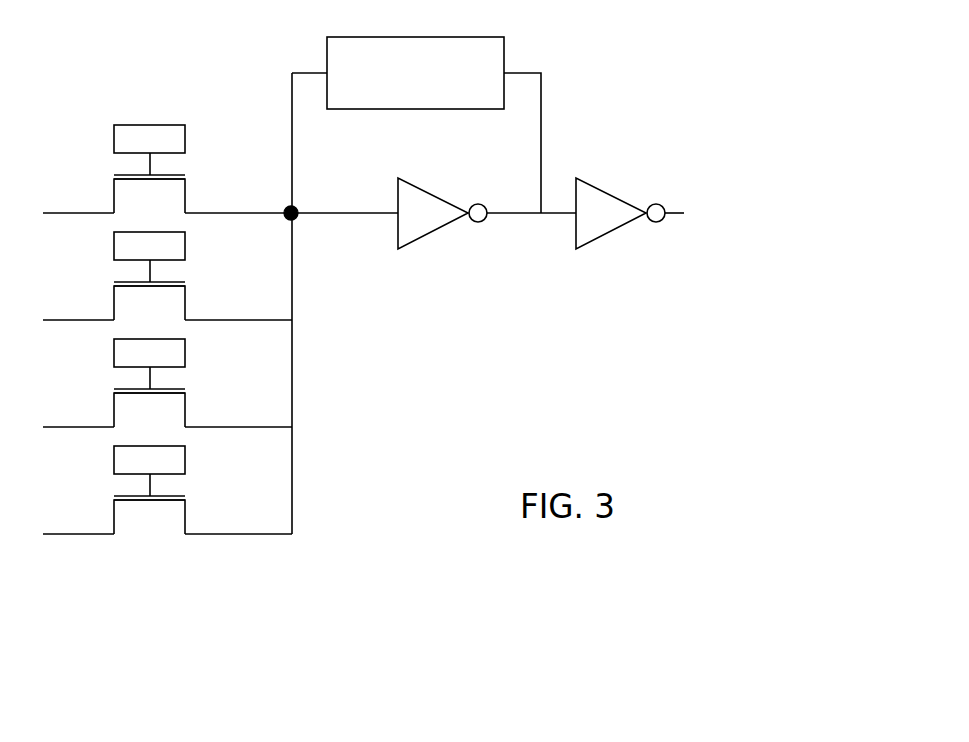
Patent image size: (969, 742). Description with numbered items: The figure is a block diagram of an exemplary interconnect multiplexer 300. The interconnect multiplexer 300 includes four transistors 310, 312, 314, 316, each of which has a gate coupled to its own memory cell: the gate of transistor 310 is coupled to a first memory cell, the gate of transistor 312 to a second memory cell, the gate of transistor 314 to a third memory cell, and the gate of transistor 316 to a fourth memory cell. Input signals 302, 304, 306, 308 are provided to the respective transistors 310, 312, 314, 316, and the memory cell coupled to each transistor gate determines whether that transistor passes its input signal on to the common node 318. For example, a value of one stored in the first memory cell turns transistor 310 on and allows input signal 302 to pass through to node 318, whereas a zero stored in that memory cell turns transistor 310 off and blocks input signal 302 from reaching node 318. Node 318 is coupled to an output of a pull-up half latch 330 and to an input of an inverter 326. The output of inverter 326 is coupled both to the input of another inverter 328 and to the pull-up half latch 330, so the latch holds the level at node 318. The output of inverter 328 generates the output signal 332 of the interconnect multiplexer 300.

The interconnect multiplexer 300 is at (95, 65).
The input signal 302 is at (57, 214).
The input signal 304 is at (57, 321).
The input signal 306 is at (57, 428).
The input signal 308 is at (57, 535).
The transistor 310 is at (114, 198).
The transistor 312 is at (114, 305).
The transistor 314 is at (114, 412).
The transistor 316 is at (114, 519).
The node 318 is at (290, 210).
The inverter 326 is at (442, 213).
The inverter 328 is at (620, 213).
The pull-up half latch 330 is at (416, 125).
The output signal 332 is at (695, 214).